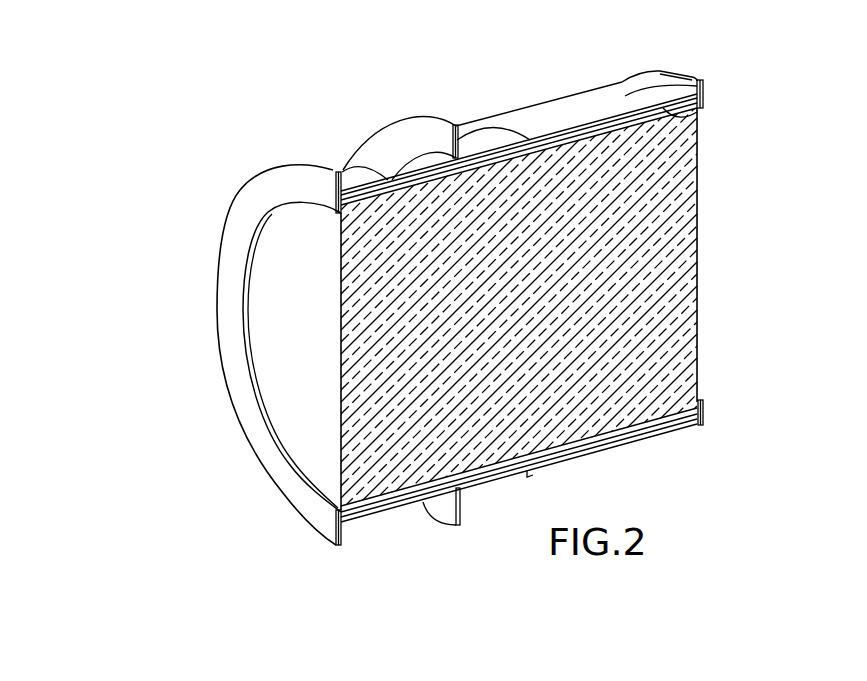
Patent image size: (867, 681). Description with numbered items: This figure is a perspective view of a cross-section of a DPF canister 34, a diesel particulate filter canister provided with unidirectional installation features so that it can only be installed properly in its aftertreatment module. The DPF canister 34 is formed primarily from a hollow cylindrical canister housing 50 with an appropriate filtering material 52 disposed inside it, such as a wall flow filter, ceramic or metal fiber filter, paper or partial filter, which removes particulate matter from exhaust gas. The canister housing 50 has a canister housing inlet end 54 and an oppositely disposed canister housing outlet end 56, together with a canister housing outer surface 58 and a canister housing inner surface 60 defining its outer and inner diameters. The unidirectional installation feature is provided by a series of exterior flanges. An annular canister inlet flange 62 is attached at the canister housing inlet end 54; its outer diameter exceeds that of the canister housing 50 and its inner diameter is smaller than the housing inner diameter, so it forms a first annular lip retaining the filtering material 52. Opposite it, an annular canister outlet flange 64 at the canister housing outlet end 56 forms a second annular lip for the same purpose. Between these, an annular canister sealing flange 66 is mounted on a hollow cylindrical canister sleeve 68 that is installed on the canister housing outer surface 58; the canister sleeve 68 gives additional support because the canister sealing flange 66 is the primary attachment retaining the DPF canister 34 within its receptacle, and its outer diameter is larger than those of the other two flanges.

The DPF canister 34 is at (116, 186).
The canister housing 50 is at (535, 115).
The filtering material 52 is at (700, 242).
The canister housing inlet end 54 is at (710, 170).
The canister housing outlet end 56 is at (266, 494).
The canister housing outer surface 58 is at (592, 105).
The canister housing inner surface 60 is at (700, 118).
The canister inlet flange 62 is at (672, 78).
The canister outlet flange 64 is at (260, 198).
The canister sealing flange 66 is at (405, 135).
The canister sleeve 68 is at (480, 143).